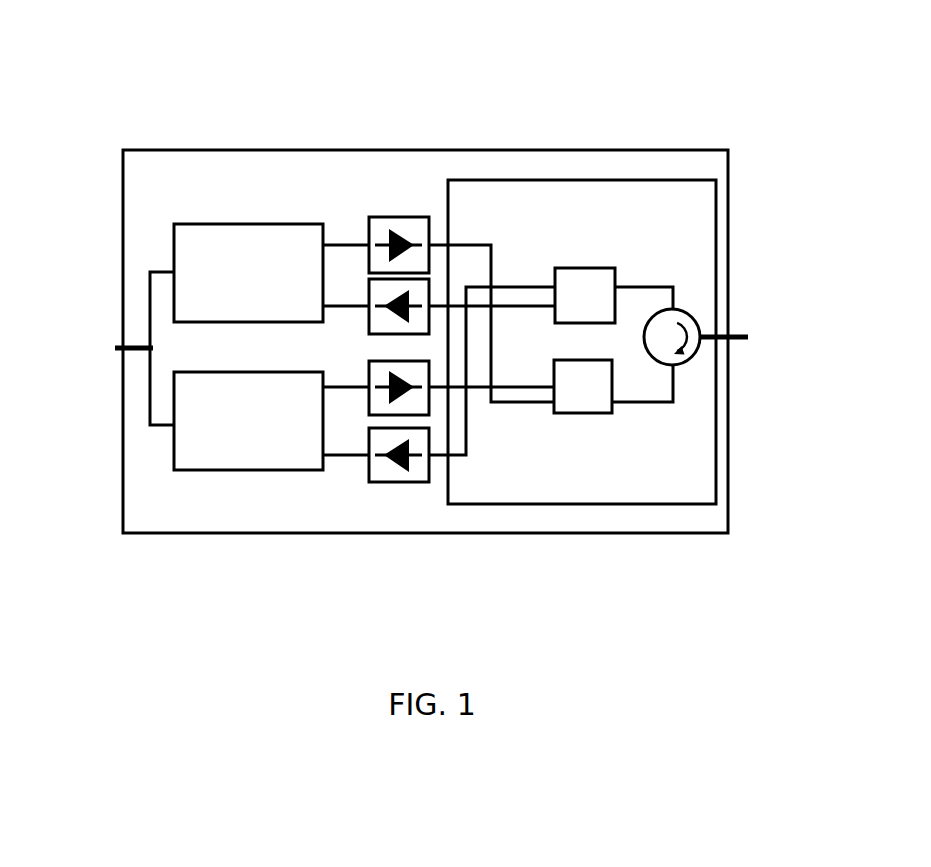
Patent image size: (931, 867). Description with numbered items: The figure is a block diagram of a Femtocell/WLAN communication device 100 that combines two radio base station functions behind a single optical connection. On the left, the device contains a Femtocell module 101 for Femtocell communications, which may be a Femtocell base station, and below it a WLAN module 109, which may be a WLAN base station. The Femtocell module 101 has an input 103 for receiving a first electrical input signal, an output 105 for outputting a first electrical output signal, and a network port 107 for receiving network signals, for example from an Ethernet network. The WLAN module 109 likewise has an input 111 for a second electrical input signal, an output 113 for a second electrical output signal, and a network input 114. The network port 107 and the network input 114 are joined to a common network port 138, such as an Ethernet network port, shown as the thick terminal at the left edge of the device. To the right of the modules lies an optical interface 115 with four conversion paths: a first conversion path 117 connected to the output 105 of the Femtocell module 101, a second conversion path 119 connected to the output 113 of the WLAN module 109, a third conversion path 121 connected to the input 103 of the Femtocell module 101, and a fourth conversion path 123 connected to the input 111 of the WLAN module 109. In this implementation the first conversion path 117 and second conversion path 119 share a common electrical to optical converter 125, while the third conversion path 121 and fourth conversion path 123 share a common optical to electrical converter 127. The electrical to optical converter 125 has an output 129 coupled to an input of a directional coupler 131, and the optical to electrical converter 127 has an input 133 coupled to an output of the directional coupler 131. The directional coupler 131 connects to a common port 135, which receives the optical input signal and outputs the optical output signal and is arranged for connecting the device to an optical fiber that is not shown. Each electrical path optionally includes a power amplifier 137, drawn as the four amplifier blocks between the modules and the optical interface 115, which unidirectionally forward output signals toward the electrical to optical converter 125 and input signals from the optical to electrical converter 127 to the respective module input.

The Femtocell/WLAN communication device 100 is at (130, 445).
The Femtocell module 101 is at (241, 224).
The input 103 is at (352, 300).
The output 105 is at (337, 243).
The network port 107 is at (160, 270).
The WLAN module 109 is at (262, 470).
The input 111 is at (349, 453).
The output 113 is at (350, 390).
The network input 114 is at (158, 427).
The optical interface 115 is at (617, 178).
The first conversion path 117 is at (513, 404).
The second conversion path 119 is at (525, 389).
The third conversion path 121 is at (505, 306).
The fourth conversion path 123 is at (542, 288).
The electrical to optical converter 125 is at (597, 268).
The optical to electrical converter 127 is at (585, 413).
The output 129 is at (647, 403).
The directional coupler 131 is at (688, 355).
The input 133 is at (640, 277).
The common port 135 is at (747, 333).
The power amplifier 137 is at (400, 217).
The common network port 138 is at (115, 346).